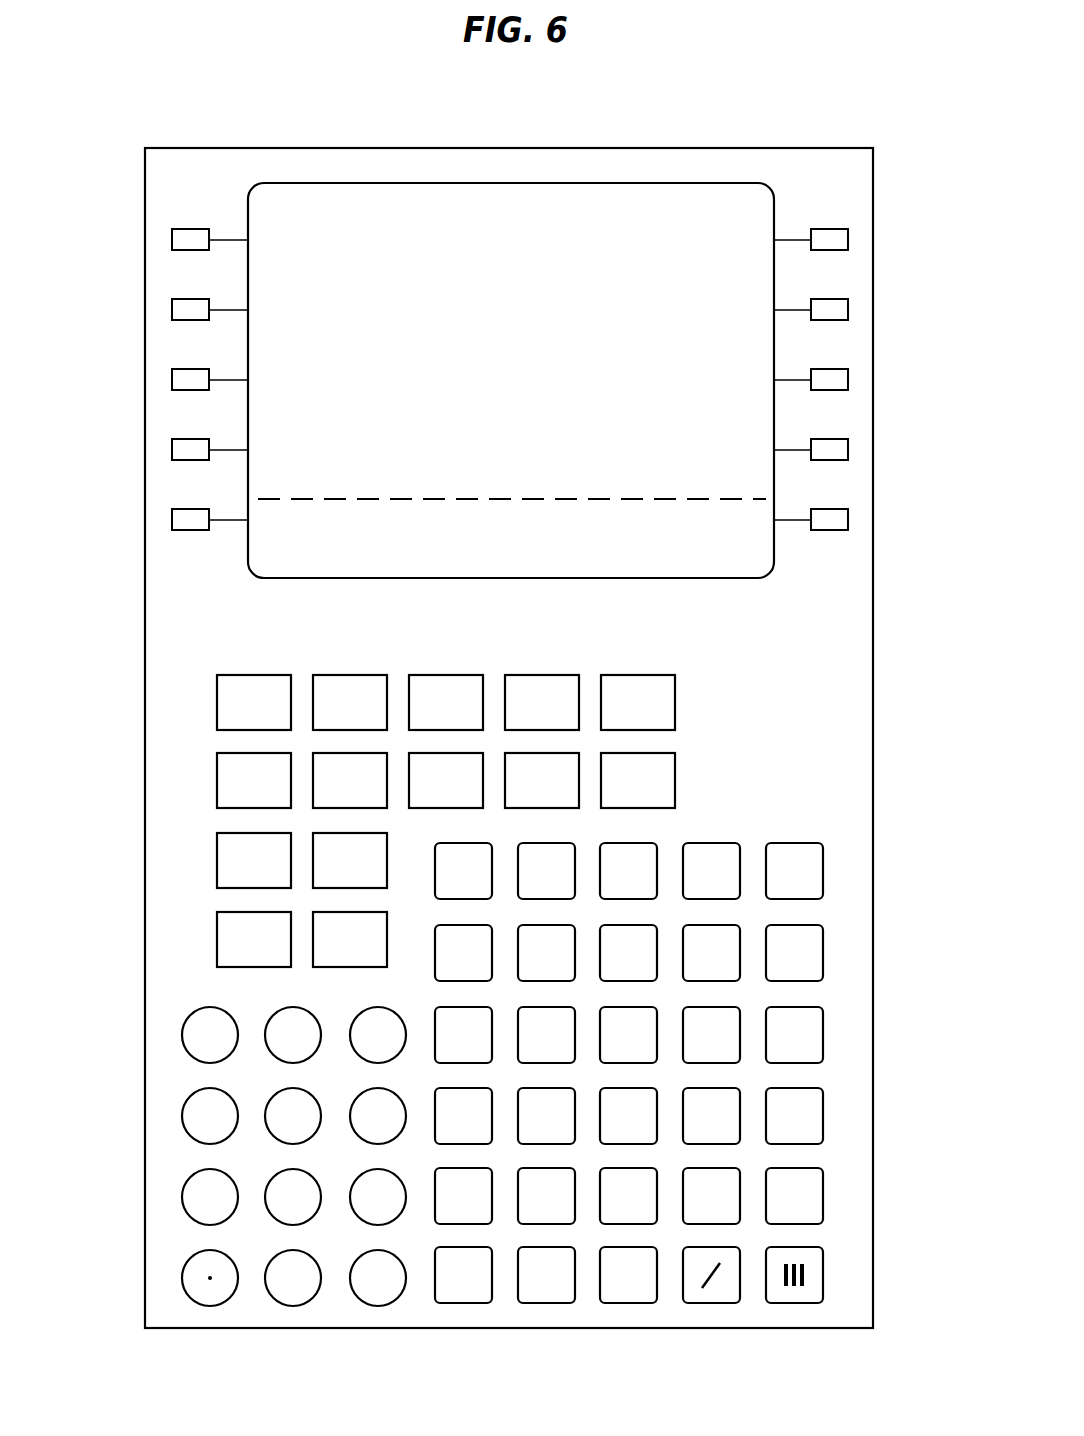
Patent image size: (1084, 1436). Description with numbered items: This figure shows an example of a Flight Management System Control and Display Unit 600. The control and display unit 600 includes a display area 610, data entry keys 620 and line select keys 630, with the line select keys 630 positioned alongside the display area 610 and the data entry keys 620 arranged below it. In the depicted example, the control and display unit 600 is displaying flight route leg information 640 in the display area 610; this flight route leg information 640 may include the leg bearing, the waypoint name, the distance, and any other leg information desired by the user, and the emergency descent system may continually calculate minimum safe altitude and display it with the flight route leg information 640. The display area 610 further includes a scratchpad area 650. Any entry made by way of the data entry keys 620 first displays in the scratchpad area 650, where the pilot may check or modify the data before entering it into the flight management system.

The control and display unit 600 is at (784, 120).
The display area 610 is at (366, 220).
The data entry keys 620 is at (810, 936).
The line select keys 630 is at (837, 240).
The flight route leg information 640 is at (277, 273).
The scratchpad area 650 is at (710, 540).